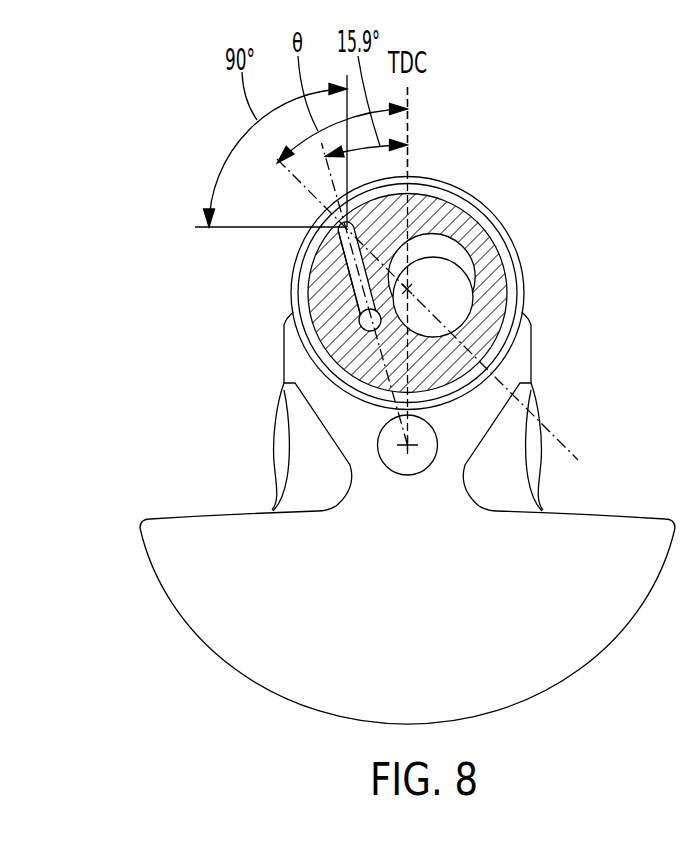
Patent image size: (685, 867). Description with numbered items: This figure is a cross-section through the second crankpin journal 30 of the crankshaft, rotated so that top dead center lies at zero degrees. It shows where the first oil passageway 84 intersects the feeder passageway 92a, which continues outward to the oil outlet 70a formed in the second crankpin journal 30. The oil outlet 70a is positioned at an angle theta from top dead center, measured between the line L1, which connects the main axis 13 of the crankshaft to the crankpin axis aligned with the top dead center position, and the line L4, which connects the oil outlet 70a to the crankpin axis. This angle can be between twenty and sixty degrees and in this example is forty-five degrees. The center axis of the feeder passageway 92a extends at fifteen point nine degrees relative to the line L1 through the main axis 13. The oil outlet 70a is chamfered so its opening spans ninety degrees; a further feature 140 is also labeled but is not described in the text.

The main axis 13 is at (409, 452).
The second crankpin journal 30 is at (493, 245).
The oil outlet 70a is at (339, 226).
The first oil passageway 84 is at (359, 325).
The feeder passageway 92a is at (345, 284).
The crank pin bore 140 is at (395, 274).
The line connecting the main axis to the crankpin axis at TDC L1 is at (412, 132).
The line connecting the oil outlet to the crankpin axis L4 is at (580, 455).